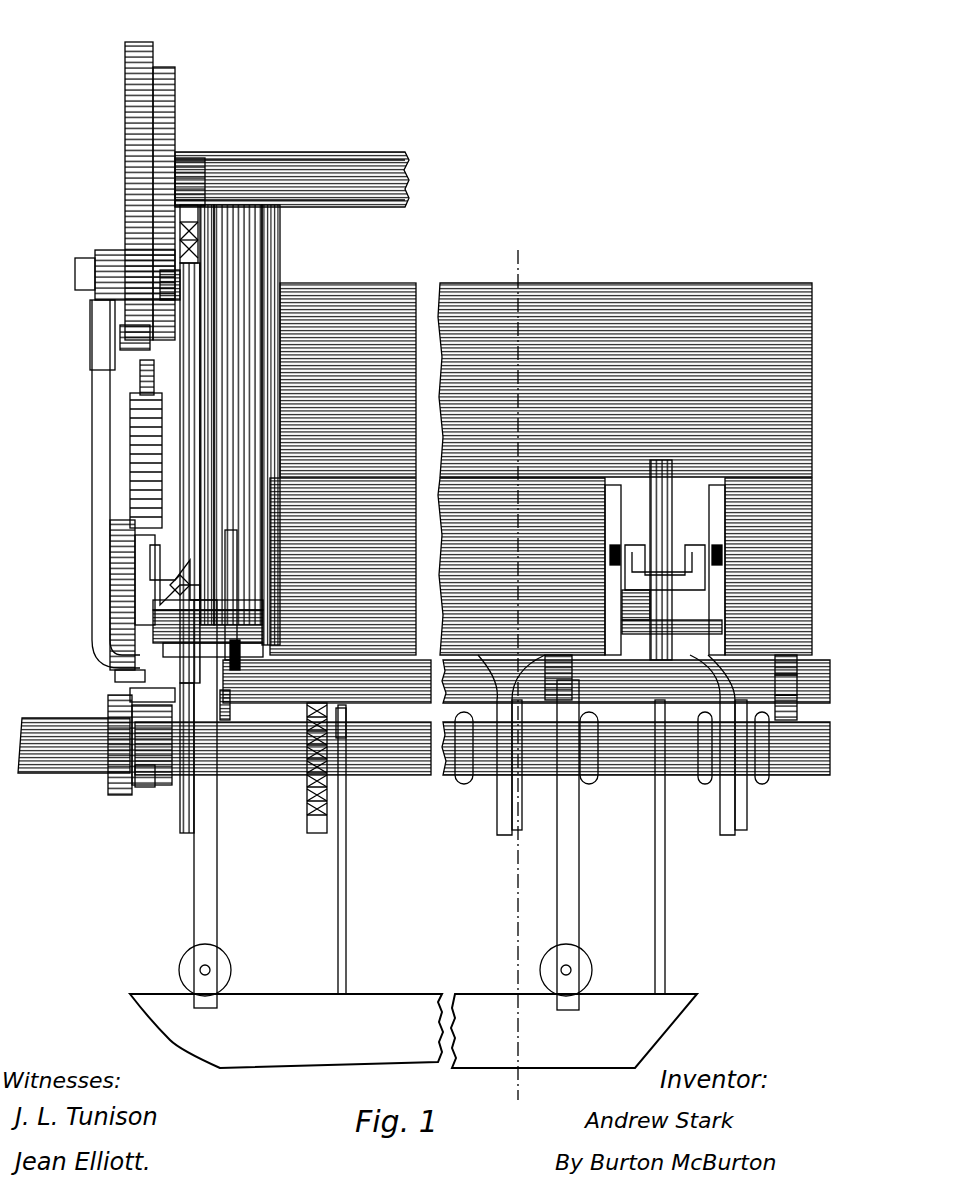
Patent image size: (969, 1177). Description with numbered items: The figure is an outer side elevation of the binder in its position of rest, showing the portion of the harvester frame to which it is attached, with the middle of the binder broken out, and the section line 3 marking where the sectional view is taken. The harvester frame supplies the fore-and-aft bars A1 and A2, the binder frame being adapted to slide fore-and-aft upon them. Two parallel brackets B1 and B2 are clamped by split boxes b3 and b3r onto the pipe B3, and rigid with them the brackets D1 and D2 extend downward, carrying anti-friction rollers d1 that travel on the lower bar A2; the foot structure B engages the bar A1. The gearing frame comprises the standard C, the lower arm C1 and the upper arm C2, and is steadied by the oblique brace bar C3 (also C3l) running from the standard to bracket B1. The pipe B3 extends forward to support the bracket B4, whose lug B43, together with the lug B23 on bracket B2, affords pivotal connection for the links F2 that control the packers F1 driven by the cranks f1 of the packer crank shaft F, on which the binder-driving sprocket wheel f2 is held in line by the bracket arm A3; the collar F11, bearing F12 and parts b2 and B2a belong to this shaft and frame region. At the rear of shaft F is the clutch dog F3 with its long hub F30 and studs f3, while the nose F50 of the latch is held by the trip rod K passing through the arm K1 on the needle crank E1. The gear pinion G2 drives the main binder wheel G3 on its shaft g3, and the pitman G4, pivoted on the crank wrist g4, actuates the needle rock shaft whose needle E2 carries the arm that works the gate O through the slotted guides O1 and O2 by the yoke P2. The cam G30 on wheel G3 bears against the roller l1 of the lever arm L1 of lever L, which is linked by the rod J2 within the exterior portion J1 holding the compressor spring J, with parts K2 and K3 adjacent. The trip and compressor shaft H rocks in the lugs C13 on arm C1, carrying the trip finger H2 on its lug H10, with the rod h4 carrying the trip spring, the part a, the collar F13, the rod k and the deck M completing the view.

The section line 3— 3 is at (512, 672).
The main binder wheel G3 is at (150, 62).
The cam G30 is at (168, 112).
The shaft g3 is at (190, 172).
The upper arm C2 is at (392, 170).
The bearing frame a is at (196, 215).
The standard C is at (200, 425).
The anti-friction roller l1 is at (200, 276).
The lever arm L1 is at (178, 288).
The table M is at (546, 380).
The gate O is at (541, 566).
The slotted guide O1 is at (624, 570).
The guide plate O2 is at (701, 570).
The trip arm or finger H2 is at (663, 476).
The yoke P2 is at (608, 552).
The bracket K2 is at (628, 612).
The arm K1 is at (688, 596).
The lug H10 is at (630, 632).
The oblique brace bar C3 is at (560, 650).
The frame B is at (745, 660).
The pipe B3 is at (526, 681).
The bolt b2 is at (548, 672).
The frame part B2a is at (548, 662).
The packer crank shaft F is at (400, 762).
The bracket B2 is at (560, 745).
The fore-and-aft bar A1 is at (62, 758).
The clutch dog F3 is at (118, 770).
The collar F13 is at (146, 775).
The stud f3 is at (132, 695).
The long hub F30 is at (128, 748).
The nose F50 is at (128, 700).
The bracket D1 is at (217, 890).
The bracket B1 is at (222, 740).
The split box b3 is at (230, 705).
The anti-friction roller d1 is at (215, 965).
The bracket arm A3 is at (346, 940).
The fore-and-aft bar A2 is at (413, 1031).
The binder-driving sprocket wheel f2 is at (330, 792).
The hanger F12 is at (505, 800).
The packer F1 is at (740, 820).
The collar F11 is at (610, 775).
The crank f1 is at (705, 775).
The bracket D2 is at (580, 868).
The needle E2 is at (665, 868).
The lug B23 is at (548, 700).
The link F2 is at (800, 664).
The split box b3r is at (800, 684).
The bracket B4 is at (800, 705).
The lug B43 is at (815, 720).
The crank wrist g4 is at (80, 288).
The gear pinion G2 is at (122, 335).
The lever L is at (108, 362).
The pitman G4 is at (92, 440).
The compressor spring J is at (130, 490).
The exterior portion of compressor link J1 is at (132, 467).
The trip rod K is at (117, 525).
The rod J2 is at (110, 563).
The slide K3 is at (113, 590).
The crank E1 is at (118, 618).
The rod h4 is at (158, 572).
The rod k is at (215, 605).
The oblique brace bar C3l is at (258, 630).
The lug C13 is at (262, 582).
The lower arm C1 is at (255, 600).
The trip and compressor shaft H is at (250, 615).